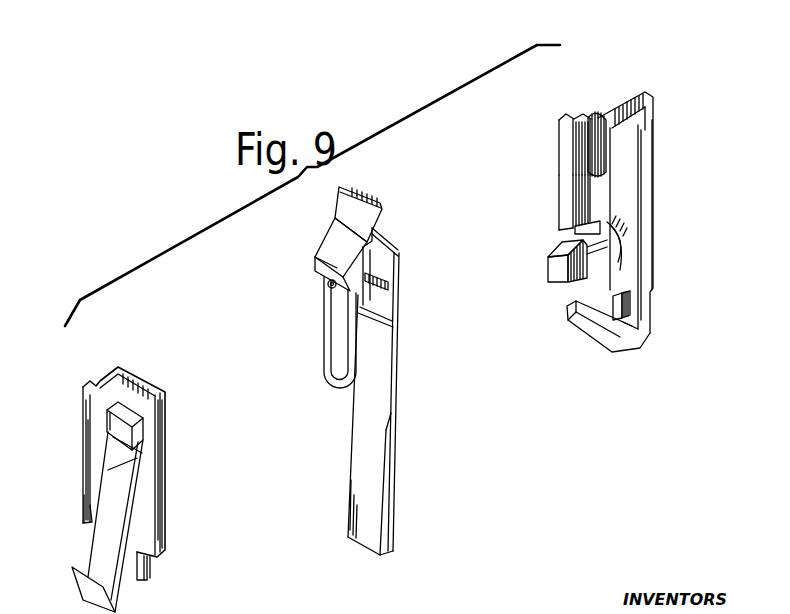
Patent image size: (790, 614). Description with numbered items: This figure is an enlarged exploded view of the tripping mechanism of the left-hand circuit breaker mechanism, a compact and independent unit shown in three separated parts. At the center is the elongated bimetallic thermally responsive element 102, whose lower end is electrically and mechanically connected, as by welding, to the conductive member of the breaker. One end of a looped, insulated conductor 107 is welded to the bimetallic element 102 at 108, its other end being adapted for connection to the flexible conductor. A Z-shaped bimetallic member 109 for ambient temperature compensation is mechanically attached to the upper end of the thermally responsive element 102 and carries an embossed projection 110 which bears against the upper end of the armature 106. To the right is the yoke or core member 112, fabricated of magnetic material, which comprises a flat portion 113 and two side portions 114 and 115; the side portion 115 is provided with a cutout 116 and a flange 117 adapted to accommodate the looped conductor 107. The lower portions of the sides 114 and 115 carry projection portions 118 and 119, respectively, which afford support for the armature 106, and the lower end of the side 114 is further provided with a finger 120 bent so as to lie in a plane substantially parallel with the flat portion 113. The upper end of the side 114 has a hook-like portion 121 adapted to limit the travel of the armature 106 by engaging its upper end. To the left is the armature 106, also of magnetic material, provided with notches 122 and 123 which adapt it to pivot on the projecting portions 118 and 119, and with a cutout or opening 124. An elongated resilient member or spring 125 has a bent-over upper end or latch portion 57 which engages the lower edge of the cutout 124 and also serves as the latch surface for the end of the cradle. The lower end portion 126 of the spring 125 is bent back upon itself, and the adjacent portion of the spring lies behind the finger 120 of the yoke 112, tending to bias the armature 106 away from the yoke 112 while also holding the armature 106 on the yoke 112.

The latch portion 57 is at (137, 449).
The bimetallic thermally responsive element 102 is at (368, 472).
The armature 106 is at (167, 493).
The looped insulated conductor 107 is at (332, 386).
The weld connection 108 is at (395, 284).
The Z-shaped bimetallic member 109 is at (333, 250).
The embossed projection 110 is at (325, 287).
The yoke or core member 112 is at (657, 212).
The flat portion 113 is at (612, 198).
The side portion 114 is at (643, 250).
The side portion 115 is at (585, 190).
The cutout 116 is at (573, 234).
The flange 117 is at (568, 138).
The projection portion 118 is at (630, 305).
The projection portion 119 is at (550, 264).
The finger 120 is at (588, 328).
The hook-like portion 121 is at (605, 115).
The notch 122 is at (150, 568).
The notch 123 is at (88, 520).
The cutout or opening 124 is at (110, 421).
The elongated resilient member or spring 125 is at (115, 492).
The lower end portion 126 is at (90, 590).